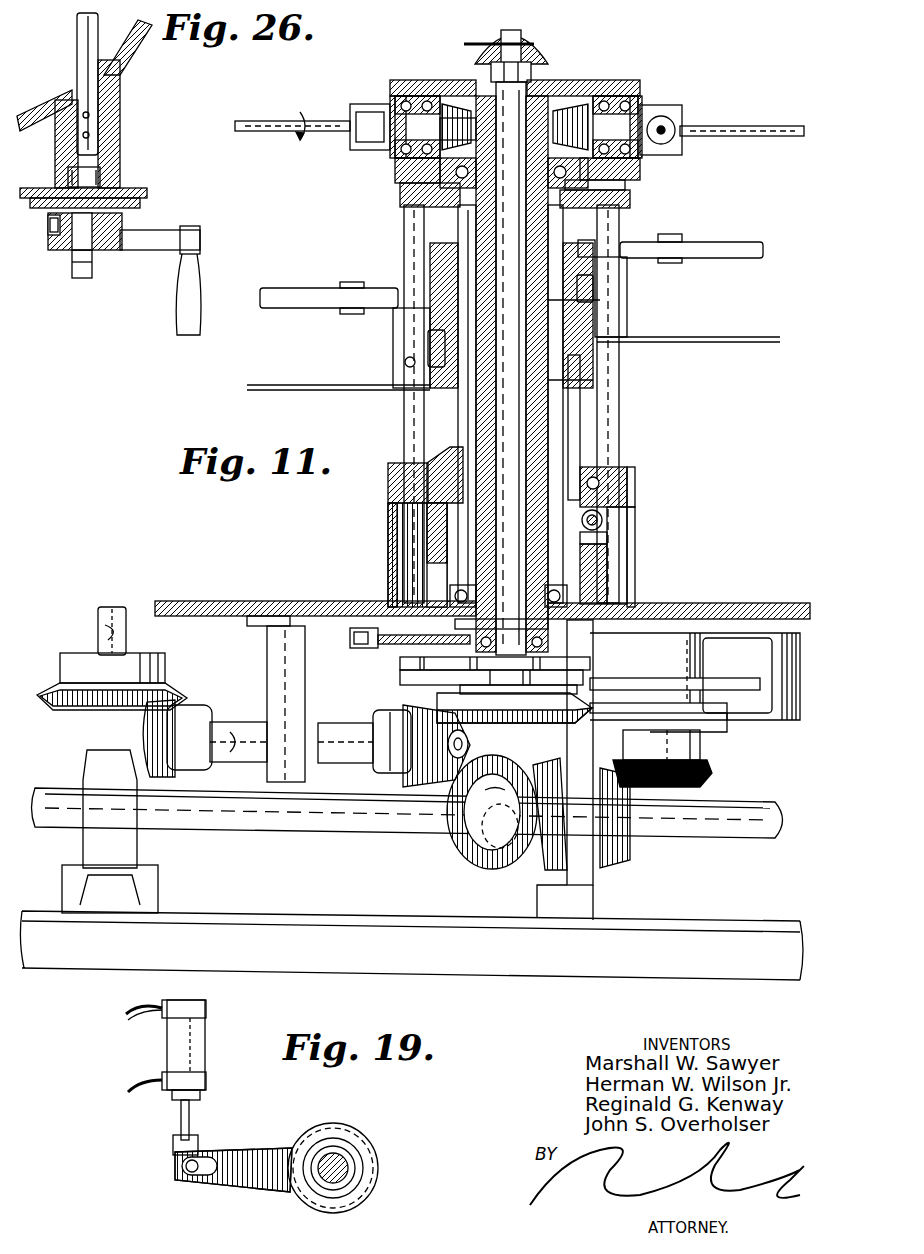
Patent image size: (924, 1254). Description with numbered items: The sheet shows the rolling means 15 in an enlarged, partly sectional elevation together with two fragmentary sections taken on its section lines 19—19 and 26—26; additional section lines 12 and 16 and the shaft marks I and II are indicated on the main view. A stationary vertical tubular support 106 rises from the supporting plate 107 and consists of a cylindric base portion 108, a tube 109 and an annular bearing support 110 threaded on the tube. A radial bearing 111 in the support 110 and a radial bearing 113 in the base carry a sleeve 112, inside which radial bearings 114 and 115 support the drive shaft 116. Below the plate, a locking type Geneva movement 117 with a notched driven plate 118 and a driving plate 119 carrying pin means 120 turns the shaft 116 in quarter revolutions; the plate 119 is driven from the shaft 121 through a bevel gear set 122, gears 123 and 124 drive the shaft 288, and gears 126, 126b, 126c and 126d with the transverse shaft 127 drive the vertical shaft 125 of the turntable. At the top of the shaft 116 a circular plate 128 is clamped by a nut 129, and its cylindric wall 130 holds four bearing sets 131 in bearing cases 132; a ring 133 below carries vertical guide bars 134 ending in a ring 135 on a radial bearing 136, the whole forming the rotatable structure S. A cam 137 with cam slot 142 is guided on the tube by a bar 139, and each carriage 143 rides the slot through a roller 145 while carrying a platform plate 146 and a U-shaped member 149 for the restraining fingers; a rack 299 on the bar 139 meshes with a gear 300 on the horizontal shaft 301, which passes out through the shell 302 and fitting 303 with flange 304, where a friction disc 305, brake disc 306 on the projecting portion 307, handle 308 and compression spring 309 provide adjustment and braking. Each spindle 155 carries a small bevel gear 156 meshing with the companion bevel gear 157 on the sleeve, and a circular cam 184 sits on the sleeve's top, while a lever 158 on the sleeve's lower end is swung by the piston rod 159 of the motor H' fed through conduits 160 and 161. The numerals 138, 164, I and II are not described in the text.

In FIG. 26, the horizontal shaft 301 is at (79, 52).
In FIG. 11, the horizontal shaft 301 is at (656, 537).
In FIG. 26, the shell 302 is at (134, 56).
In FIG. 11, the shell 302 is at (388, 516).
In FIG. 26, the fitting 303 is at (120, 122).
In FIG. 26, the flange 304 is at (112, 178).
In FIG. 26, the friction disc 305 is at (148, 190).
In FIG. 26, the brake disc 306 is at (142, 205).
In FIG. 26, the projecting portion of shaft 307 is at (110, 253).
In FIG. 26, the handle 308 is at (62, 251).
In FIG. 26, the compression spring 309 is at (56, 226).
In FIG. 11, the nut 129 is at (540, 62).
In FIG. 11, the radial bearing 114 is at (530, 120).
In FIG. 11, the rolling means 15 is at (618, 70).
In FIG. 11, the circular plate 128 is at (612, 86).
In FIG. 11, the bearing set 131 is at (410, 78).
In FIG. 11, the bearing case 132 is at (405, 82).
In FIG. 11, the cylindric wall 130 is at (640, 168).
In FIG. 11, the radial bearing 111 is at (625, 184).
In FIG. 11, the annular bearing support 110 is at (630, 200).
In FIG. 11, the input shaft 164 is at (325, 121).
In FIG. 11, the spindle 155 is at (458, 120).
In FIG. 11, the circular cam 184 is at (478, 124).
In FIG. 11, the companion bevel gear 157 is at (512, 368).
In FIG. 11, the small bevel gear 156 is at (398, 172).
In FIG. 11, the ring 133 is at (400, 200).
In FIG. 11, the rotatable structure S is at (367, 191).
In FIG. 11, the vertical guide bars 134 is at (410, 270).
In FIG. 11, the sleeve 138 is at (600, 320).
In FIG. 11, the cam 137 is at (610, 335).
In FIG. 11, the U-shaped metal member 149 is at (310, 292).
In FIG. 11, the section line 16— 16 is at (252, 290).
In FIG. 11, the section line 12— 12 is at (245, 126).
In FIG. 11, the shaft I is at (259, 92).
In FIG. 11, the shaft II is at (754, 96).
In FIG. 11, the platform plate 146 is at (268, 392).
In FIG. 11, the carriage 143 is at (400, 340).
In FIG. 11, the roller 145 is at (430, 335).
In FIG. 11, the cam slot 142 is at (425, 350).
In FIG. 11, the sleeve 112 is at (600, 300).
In FIG. 19, the sleeve 112 is at (340, 1136).
In FIG. 11, the tube 109 is at (593, 398).
In FIG. 11, the bar 139 is at (590, 420).
In FIG. 11, the radial bearing 136 is at (420, 462).
In FIG. 11, the ring 135 is at (395, 468).
In FIG. 11, the stationary vertical tubular support 106 is at (632, 476).
In FIG. 11, the section line 26— 26 is at (540, 522).
In FIG. 11, the gear 300 is at (605, 522).
In FIG. 11, the rack 299 is at (610, 540).
In FIG. 11, the base portion 108 is at (598, 586).
In FIG. 11, the radial bearing 115 is at (612, 600).
In FIG. 19, the radial bearing 115 is at (355, 1178).
In FIG. 11, the radial bearing 113 is at (452, 590).
In FIG. 11, the supporting plate 107 is at (772, 602).
In FIG. 11, the pin means 120 is at (570, 650).
In FIG. 11, the lever 158 is at (385, 636).
In FIG. 19, the lever 158 is at (245, 1148).
In FIG. 11, the locking type Geneva movement 117 is at (499, 665).
In FIG. 11, the driving plate 119 is at (695, 680).
In FIG. 11, the section line 19— 19 is at (347, 650).
In FIG. 11, the notched driven plate 118 is at (600, 690).
In FIG. 11, the bevel gear set 122 is at (628, 790).
In FIG. 11, the gear 126 is at (505, 725).
In FIG. 11, the gear 126b is at (412, 778).
In FIG. 11, the transverse shaft 127 is at (345, 720).
In FIG. 11, the gear 126c is at (190, 702).
In FIG. 11, the gear 126d is at (165, 672).
In FIG. 11, the vertical shaft 125 is at (90, 620).
In FIG. 11, the shaft 288 is at (440, 840).
In FIG. 11, the shaft 121 is at (690, 838).
In FIG. 11, the gear 123 is at (465, 860).
In FIG. 11, the gear 124 is at (540, 862).
In FIG. 11, the drive shaft 116 is at (495, 540).
In FIG. 19, the drive shaft 116 is at (348, 1162).
In FIG. 19, the double acting fluid operated motor H' is at (205, 1049).
In FIG. 19, the conduit 161 is at (130, 1010).
In FIG. 19, the conduit 160 is at (132, 1082).
In FIG. 19, the piston rod 159 is at (192, 1110).